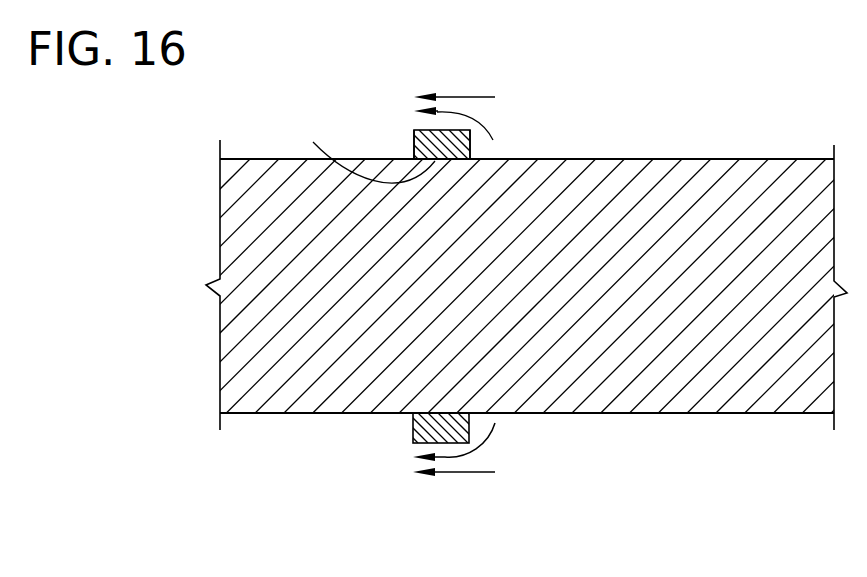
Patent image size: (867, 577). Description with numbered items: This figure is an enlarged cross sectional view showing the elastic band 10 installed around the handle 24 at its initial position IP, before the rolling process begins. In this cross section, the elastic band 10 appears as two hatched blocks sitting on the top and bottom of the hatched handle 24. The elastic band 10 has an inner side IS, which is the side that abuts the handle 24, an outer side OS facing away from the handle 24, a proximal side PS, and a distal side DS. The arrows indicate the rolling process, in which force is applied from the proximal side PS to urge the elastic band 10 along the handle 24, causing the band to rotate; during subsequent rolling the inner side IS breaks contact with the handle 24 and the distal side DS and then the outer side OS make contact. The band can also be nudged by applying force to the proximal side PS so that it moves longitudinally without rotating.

The elastic band 10 is at (476, 84).
The handle 24 is at (673, 158).
The outer side OS is at (423, 130).
The distal side DS is at (414, 146).
The proximal side PS is at (472, 156).
The inner side IS is at (367, 149).
The initial position IP is at (468, 444).